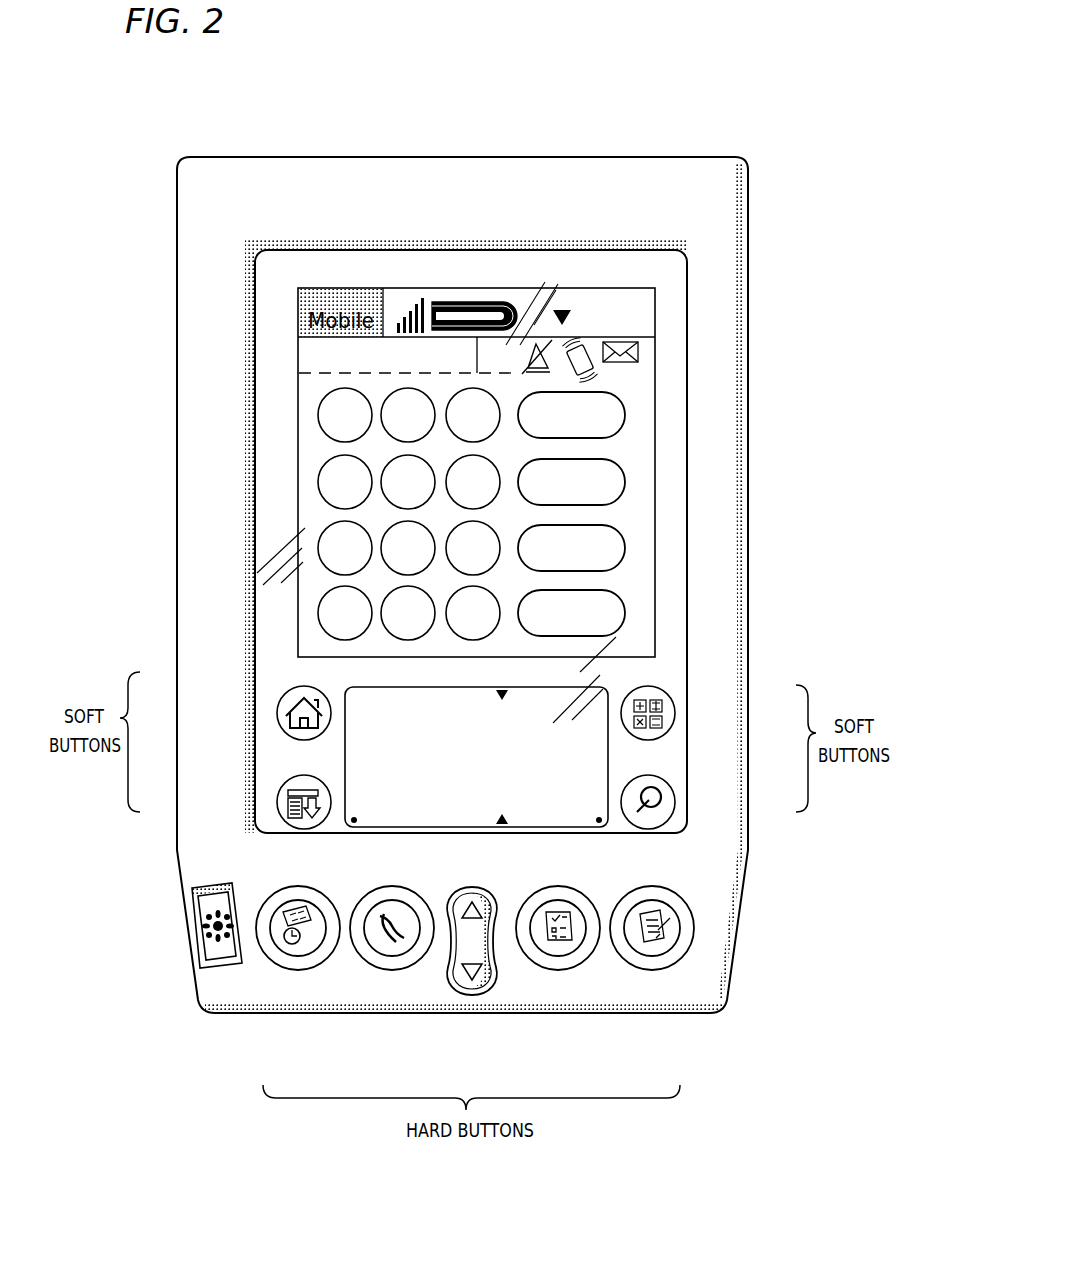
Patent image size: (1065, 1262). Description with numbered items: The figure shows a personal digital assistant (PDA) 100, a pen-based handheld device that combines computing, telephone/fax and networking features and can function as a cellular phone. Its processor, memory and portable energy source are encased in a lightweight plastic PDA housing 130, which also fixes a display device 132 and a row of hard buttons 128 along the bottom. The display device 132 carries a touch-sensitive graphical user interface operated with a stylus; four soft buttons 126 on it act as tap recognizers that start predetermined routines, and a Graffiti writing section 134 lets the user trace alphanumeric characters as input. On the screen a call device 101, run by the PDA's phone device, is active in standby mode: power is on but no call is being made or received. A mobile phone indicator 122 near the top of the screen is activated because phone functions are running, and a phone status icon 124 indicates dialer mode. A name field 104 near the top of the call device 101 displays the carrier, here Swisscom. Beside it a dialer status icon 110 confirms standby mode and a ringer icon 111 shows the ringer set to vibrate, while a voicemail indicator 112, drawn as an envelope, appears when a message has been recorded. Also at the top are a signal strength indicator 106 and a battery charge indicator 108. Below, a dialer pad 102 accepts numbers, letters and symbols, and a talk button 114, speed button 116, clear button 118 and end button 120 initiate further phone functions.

The personal digital assistant 100 is at (328, 103).
The call device 101 is at (296, 481).
The dialer pad 102 is at (305, 403).
The name field 104 is at (305, 358).
The signal strength indicator 106 is at (418, 302).
The battery charge indicator 108 is at (477, 302).
The dialer status icon 110 is at (540, 346).
The ringer icon 111 is at (592, 370).
The voicemail indicator 112 is at (640, 352).
The talk button 114 is at (628, 420).
The speed button 116 is at (628, 487).
The clear button 118 is at (628, 548).
The end button 120 is at (628, 617).
The mobile phone indicator 122 is at (298, 288).
The phone status icon 124 is at (632, 297).
The soft buttons 126 is at (283, 712).
The hard buttons 128 is at (298, 955).
The PDA housing 130 is at (182, 848).
The display device 132 is at (267, 548).
The Graffiti writing section 134 is at (476, 761).